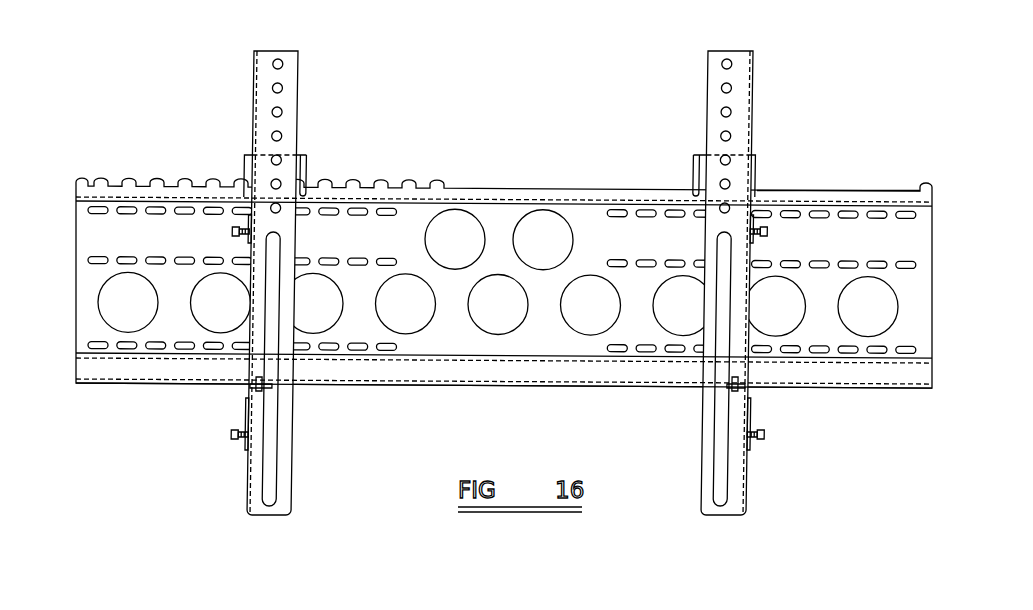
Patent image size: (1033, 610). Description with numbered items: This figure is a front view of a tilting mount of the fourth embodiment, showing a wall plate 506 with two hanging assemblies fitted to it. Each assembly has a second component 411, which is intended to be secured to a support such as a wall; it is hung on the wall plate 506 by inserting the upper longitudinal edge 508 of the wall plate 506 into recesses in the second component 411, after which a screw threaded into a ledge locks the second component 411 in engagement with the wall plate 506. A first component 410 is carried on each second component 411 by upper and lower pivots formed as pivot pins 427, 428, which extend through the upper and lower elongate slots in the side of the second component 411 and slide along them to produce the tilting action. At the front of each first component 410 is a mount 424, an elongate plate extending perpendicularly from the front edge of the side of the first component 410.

The first component 410 is at (252, 59).
The second component 411 is at (312, 172).
The mount 424 is at (263, 102).
The pivot pin 427 is at (232, 230).
The pivot pin 428 is at (228, 428).
The wall plate 506 is at (498, 193).
The upper longitudinal edge 508 is at (878, 188).